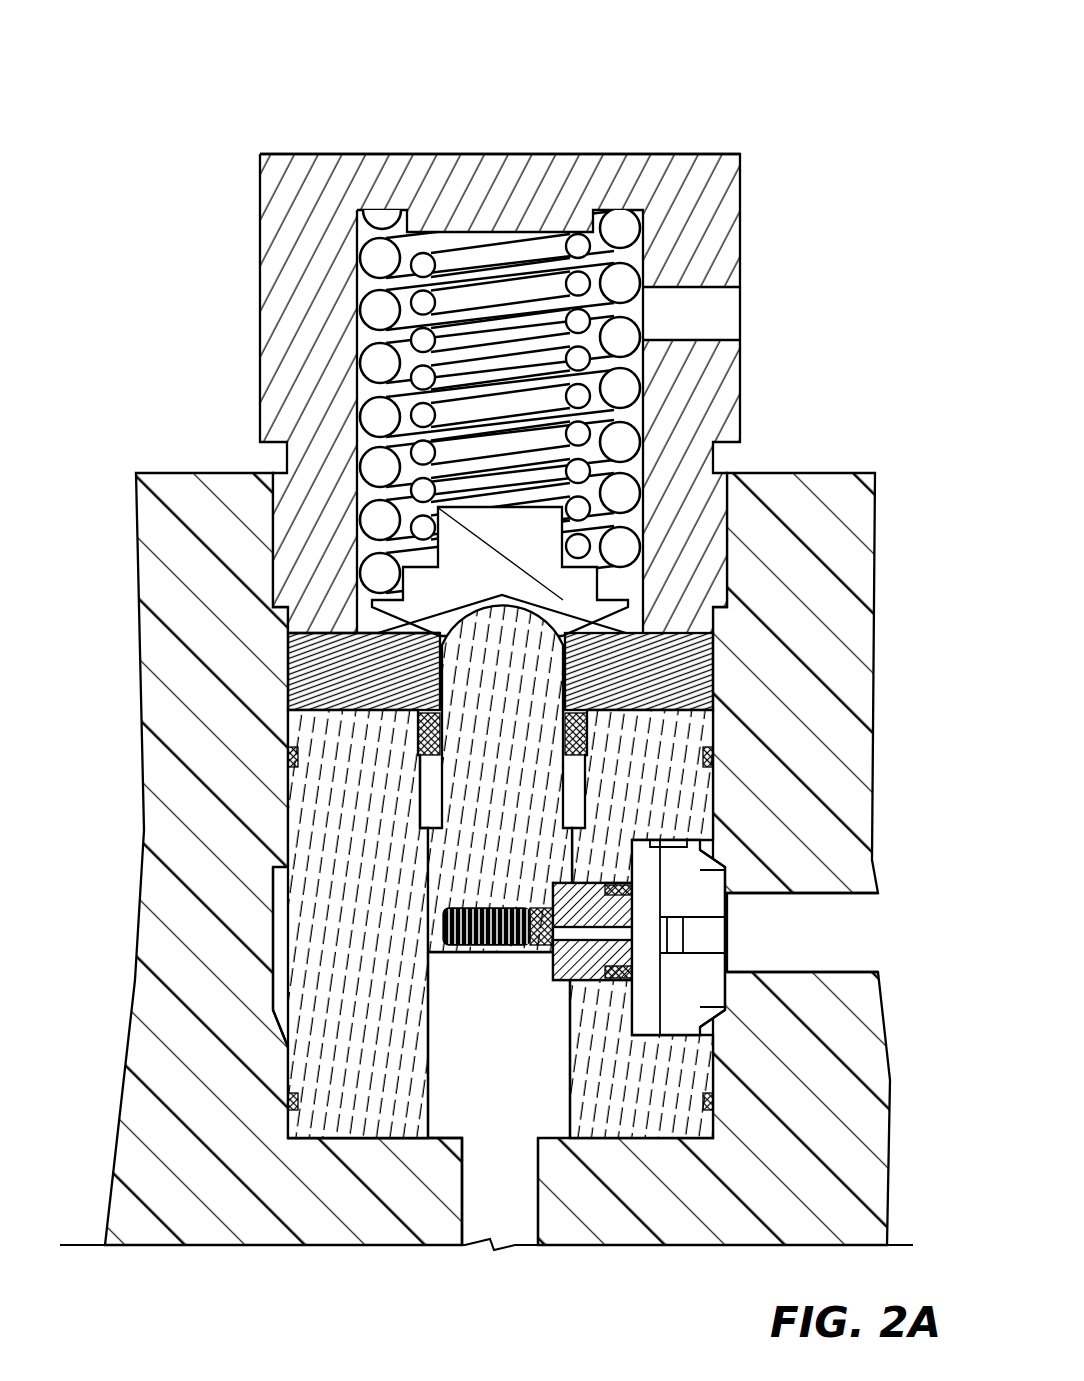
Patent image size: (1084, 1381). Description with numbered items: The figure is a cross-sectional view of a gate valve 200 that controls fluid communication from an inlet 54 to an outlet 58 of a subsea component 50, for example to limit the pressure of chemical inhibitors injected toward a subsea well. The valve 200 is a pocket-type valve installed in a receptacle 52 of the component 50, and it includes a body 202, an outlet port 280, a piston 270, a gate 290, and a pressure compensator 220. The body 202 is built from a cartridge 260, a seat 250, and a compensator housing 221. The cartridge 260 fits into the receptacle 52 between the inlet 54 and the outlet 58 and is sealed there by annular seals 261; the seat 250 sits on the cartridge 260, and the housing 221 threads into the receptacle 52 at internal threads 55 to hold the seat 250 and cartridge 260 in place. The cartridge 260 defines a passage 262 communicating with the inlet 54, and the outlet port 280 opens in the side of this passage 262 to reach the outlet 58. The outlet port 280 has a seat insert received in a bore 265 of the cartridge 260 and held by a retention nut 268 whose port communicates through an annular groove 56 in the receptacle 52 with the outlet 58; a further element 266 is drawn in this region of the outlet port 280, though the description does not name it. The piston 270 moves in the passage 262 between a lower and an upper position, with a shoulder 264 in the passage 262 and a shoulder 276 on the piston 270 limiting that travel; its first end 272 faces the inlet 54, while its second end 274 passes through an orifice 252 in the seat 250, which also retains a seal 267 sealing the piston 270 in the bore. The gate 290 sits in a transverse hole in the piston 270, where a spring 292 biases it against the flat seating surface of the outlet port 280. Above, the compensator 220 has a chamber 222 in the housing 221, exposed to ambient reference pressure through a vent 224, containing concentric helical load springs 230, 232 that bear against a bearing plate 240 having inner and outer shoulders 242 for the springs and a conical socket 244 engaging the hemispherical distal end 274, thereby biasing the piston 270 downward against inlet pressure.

The gate valve 200 is at (305, 68).
The body 202 is at (877, 447).
The subsea component 50 is at (150, 507).
The receptacle 52 is at (318, 1142).
The inlet 54 is at (536, 1222).
The internal threads 55 is at (725, 492).
The annular groove 56 is at (275, 935).
The outlet 58 is at (862, 975).
The pressure compensator 220 is at (205, 186).
The compensator housing 221 is at (572, 153).
The chamber 222 is at (365, 230).
The opening or vent 224 is at (727, 338).
The load spring 230 is at (380, 312).
The load spring 232 is at (415, 343).
The bearing plate 240 is at (462, 607).
The inner and outer shoulders 242 is at (632, 585).
The conical socket 244 is at (560, 655).
The seat 250 is at (716, 677).
The orifice 252 is at (590, 733).
The cartridge or spool 260 is at (716, 782).
The annular seals 261 is at (712, 1103).
The passage 262 is at (430, 988).
The shoulder 264 is at (428, 848).
The bore 265 is at (603, 975).
The valve member 266 is at (668, 1000).
The seal 267 is at (418, 728).
The retention nut 268 is at (724, 912).
The piston or actuator 270 is at (445, 818).
The first end 272 is at (452, 952).
The second end 274 is at (430, 637).
The shoulder 276 is at (574, 850).
The outlet port 280 is at (557, 980).
The gate 290 is at (535, 947).
The spring 292 is at (493, 948).